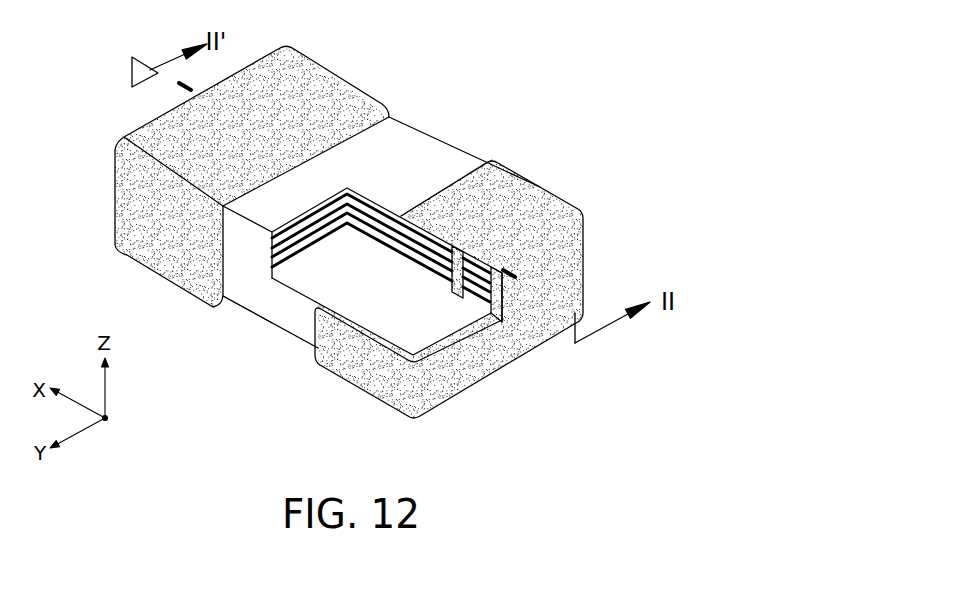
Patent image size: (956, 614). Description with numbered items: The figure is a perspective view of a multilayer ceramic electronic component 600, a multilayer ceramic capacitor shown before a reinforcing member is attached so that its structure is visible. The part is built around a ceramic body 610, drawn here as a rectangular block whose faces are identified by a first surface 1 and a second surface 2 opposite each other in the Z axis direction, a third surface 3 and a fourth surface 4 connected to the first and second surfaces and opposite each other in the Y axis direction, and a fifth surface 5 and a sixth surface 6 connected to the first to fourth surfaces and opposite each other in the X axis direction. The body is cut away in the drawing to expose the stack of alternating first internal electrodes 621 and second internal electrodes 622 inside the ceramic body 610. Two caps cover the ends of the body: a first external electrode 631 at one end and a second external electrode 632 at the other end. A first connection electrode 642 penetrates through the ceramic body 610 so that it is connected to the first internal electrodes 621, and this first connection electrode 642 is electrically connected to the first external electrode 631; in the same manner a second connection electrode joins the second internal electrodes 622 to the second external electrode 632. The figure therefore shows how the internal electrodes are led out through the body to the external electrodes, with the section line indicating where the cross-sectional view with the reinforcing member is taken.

The multilayer ceramic electronic component 600 is at (582, 49).
The first surface 1 is at (373, 172).
The second surface 2 is at (292, 308).
The third surface 3 is at (418, 173).
The fourth surface 4 is at (264, 284).
The fifth surface 5 is at (468, 353).
The sixth surface 6 is at (166, 218).
The ceramic body 610 is at (410, 150).
The first internal electrode 621 is at (467, 253).
The second internal electrode 622 is at (515, 280).
The first external electrode 631 is at (538, 200).
The second external electrode 632 is at (330, 61).
The first connection electrode 642 is at (458, 255).